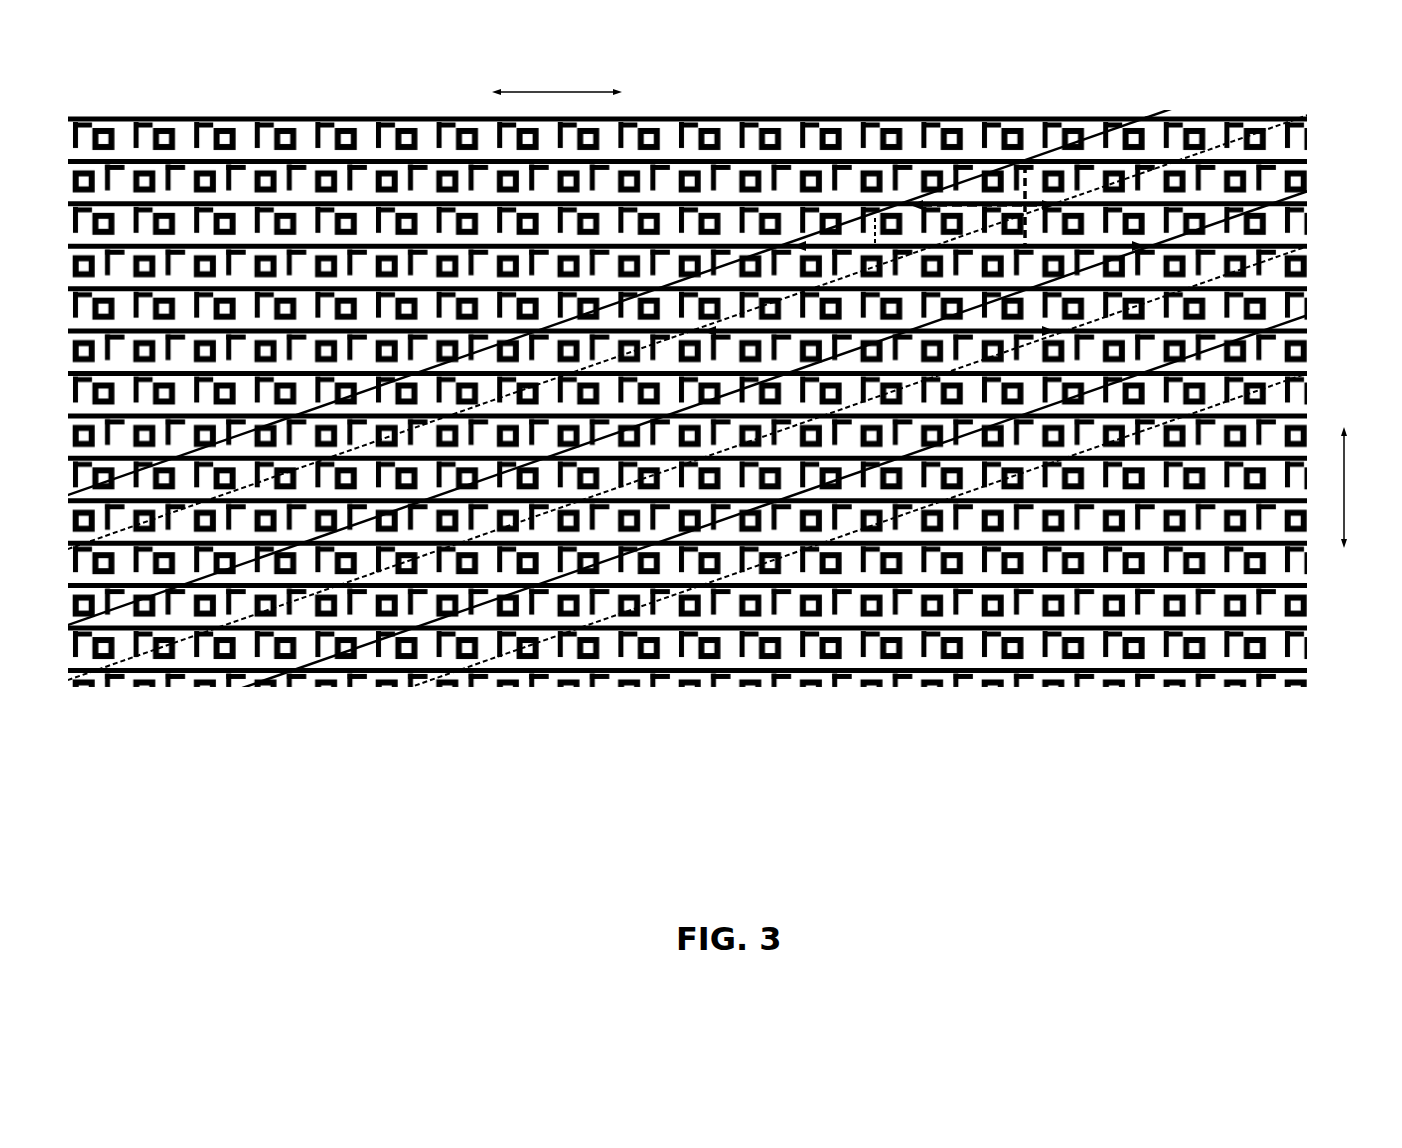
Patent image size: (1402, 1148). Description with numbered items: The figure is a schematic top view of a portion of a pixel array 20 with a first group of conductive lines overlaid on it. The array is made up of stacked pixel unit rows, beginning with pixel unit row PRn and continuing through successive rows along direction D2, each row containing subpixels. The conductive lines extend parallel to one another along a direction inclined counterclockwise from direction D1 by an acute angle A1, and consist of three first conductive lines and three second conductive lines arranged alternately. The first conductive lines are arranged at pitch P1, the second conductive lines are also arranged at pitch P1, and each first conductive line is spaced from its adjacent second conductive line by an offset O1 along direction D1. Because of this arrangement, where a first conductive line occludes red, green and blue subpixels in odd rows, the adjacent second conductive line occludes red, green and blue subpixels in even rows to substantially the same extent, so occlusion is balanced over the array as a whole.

The pixel array 20 is at (165, 95).
The pixel unit row PRn is at (662, 140).
The pitch P1 is at (790, 325).
The acute angle A1 is at (847, 240).
The offset O1 is at (997, 196).
The direction D1 is at (557, 76).
The direction D2 is at (1363, 487).